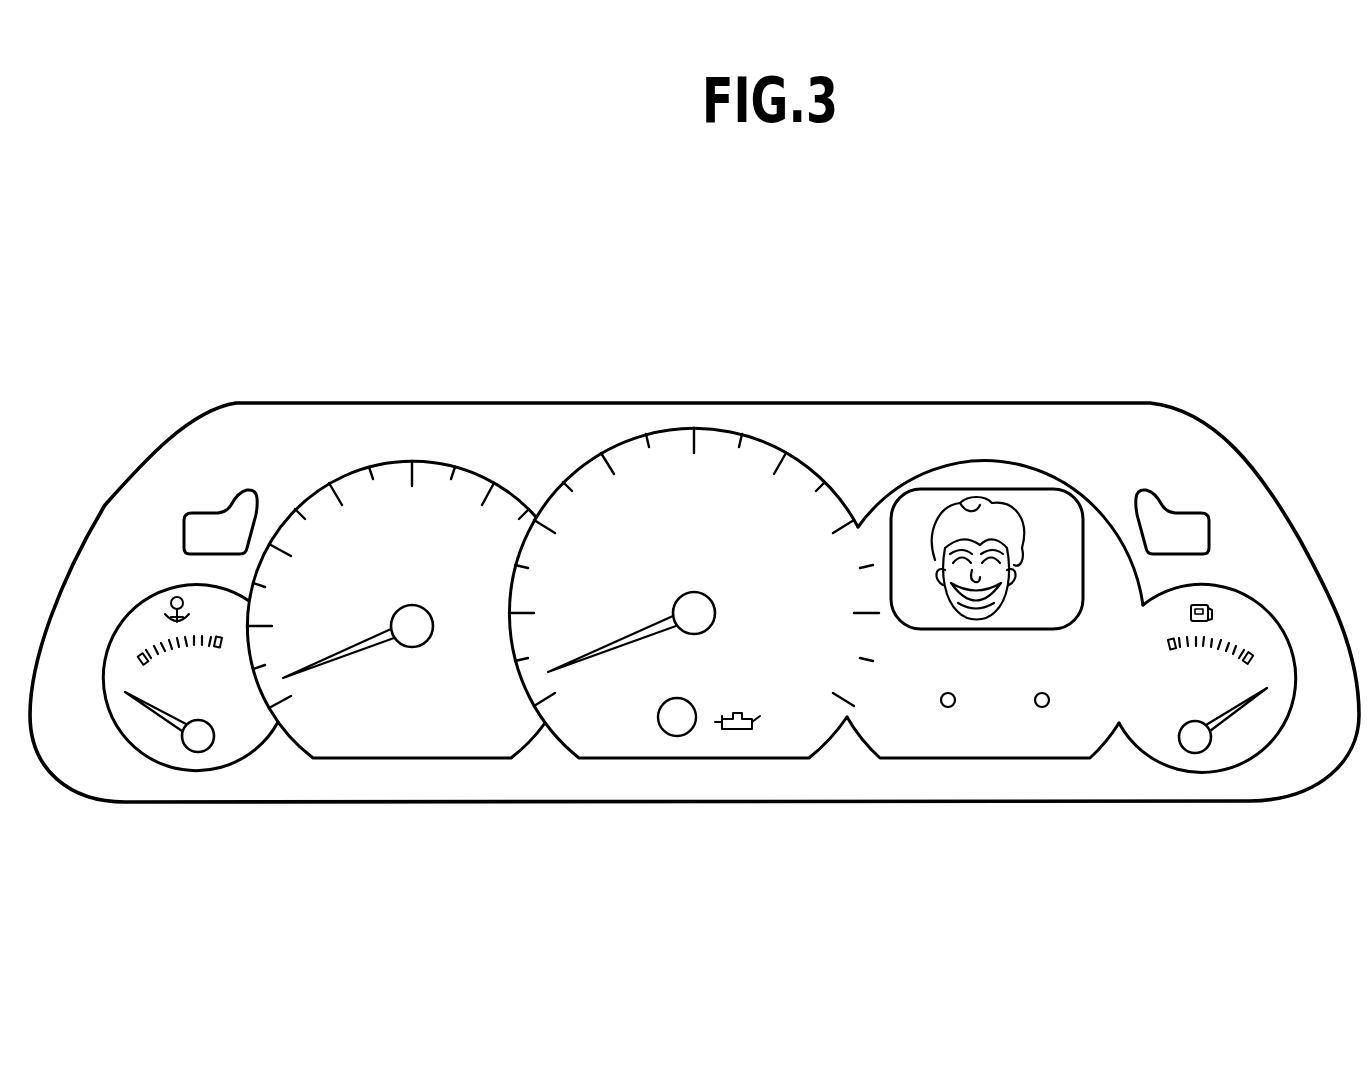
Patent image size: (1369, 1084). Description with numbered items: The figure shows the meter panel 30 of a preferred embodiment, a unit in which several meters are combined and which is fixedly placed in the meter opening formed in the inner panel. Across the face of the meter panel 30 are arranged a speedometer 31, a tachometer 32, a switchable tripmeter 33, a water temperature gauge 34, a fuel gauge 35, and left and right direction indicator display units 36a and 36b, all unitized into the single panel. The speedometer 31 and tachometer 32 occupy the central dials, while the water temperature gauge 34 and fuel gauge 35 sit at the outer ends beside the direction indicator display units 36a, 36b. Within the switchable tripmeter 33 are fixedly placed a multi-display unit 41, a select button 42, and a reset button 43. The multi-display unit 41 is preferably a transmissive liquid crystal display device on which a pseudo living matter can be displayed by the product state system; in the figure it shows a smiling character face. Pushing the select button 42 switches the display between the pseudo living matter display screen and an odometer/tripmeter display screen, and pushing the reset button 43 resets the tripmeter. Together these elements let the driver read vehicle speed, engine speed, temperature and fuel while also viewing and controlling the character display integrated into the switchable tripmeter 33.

The meter panel 30 is at (523, 403).
The speedometer 31 is at (727, 439).
The tachometer 32 is at (438, 463).
The switchable tripmeter 33 is at (987, 468).
The water temperature gauge 34 is at (171, 772).
The fuel gauge 35 is at (1202, 767).
The left direction indicator display unit 36a is at (208, 507).
The right direction indicator display unit 36b is at (1176, 509).
The multi-display unit 41 is at (1033, 514).
The select button 42 is at (947, 707).
The reset button 43 is at (1042, 707).